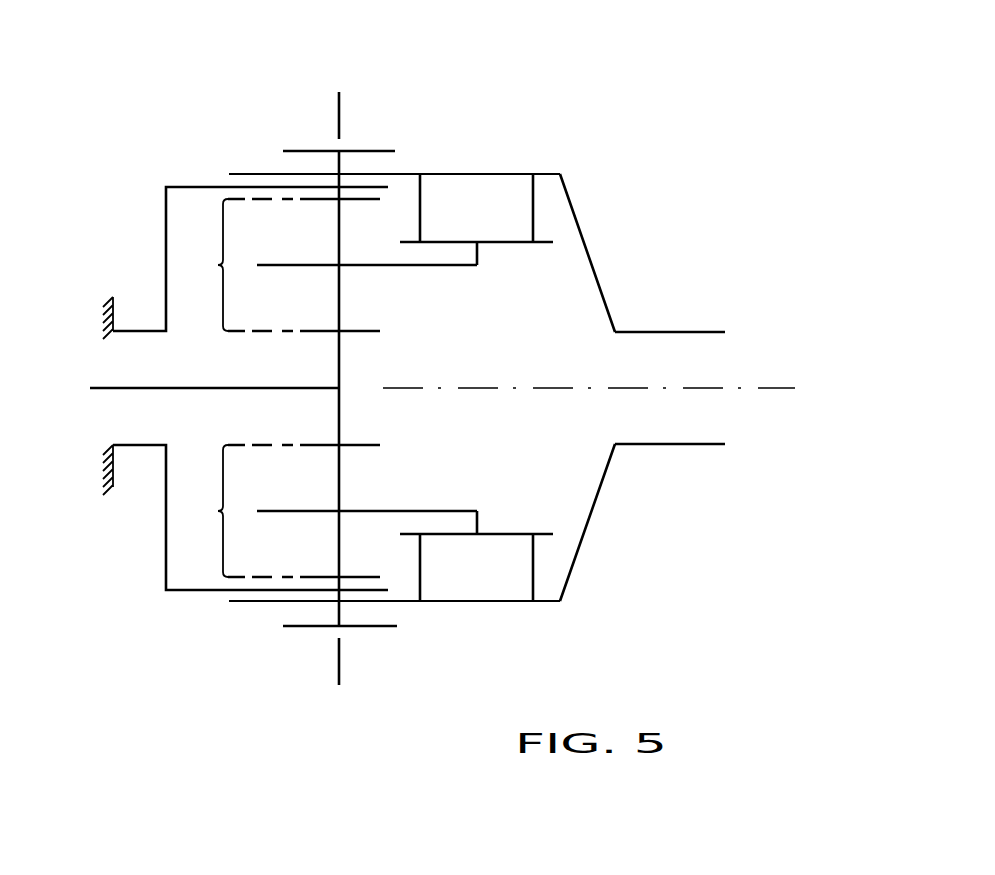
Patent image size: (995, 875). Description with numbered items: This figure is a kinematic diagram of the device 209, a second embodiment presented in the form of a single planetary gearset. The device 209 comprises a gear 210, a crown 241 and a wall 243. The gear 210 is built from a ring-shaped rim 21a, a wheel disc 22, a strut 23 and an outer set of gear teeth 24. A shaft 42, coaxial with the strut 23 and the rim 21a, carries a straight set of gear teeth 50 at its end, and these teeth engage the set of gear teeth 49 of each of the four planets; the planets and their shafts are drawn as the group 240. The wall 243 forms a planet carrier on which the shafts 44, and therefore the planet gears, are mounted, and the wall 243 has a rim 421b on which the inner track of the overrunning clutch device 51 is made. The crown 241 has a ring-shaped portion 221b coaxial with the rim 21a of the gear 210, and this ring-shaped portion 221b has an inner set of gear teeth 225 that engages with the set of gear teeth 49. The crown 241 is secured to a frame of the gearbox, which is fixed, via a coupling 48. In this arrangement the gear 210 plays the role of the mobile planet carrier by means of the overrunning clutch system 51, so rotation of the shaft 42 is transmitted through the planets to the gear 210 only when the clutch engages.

The device 209 is at (246, 103).
The outer set of gear teeth 24 is at (373, 150).
The inner set of gear teeth 225 is at (388, 186).
The gear 210 is at (253, 606).
The wheel disc 22 is at (590, 522).
The strut 23 is at (640, 445).
The overrunning clutch device 51 is at (518, 185).
The ring-shaped rim 21a is at (543, 603).
The rim 421b is at (518, 243).
The wall 243 is at (480, 253).
The shafts 44 is at (463, 268).
The set of gear teeth 49 is at (355, 199).
The straight set of gear teeth 50 is at (352, 333).
The planet gear set 240 is at (199, 388).
The ring-shaped portion 221b is at (177, 187).
The coupling 48 is at (116, 302).
The crown 241 is at (158, 568).
The shaft 42 is at (98, 387).